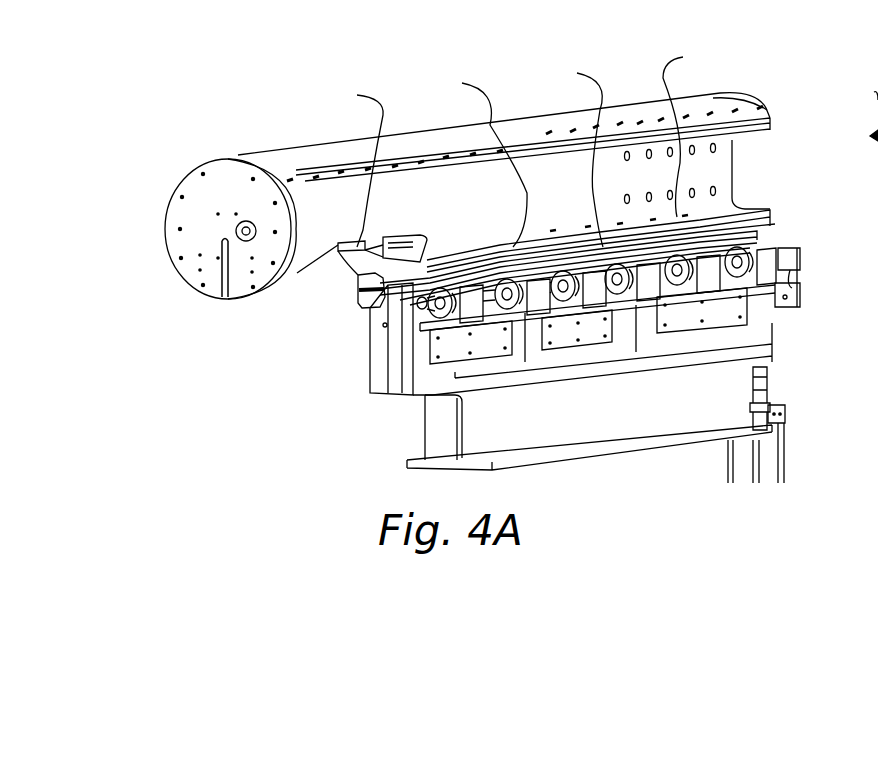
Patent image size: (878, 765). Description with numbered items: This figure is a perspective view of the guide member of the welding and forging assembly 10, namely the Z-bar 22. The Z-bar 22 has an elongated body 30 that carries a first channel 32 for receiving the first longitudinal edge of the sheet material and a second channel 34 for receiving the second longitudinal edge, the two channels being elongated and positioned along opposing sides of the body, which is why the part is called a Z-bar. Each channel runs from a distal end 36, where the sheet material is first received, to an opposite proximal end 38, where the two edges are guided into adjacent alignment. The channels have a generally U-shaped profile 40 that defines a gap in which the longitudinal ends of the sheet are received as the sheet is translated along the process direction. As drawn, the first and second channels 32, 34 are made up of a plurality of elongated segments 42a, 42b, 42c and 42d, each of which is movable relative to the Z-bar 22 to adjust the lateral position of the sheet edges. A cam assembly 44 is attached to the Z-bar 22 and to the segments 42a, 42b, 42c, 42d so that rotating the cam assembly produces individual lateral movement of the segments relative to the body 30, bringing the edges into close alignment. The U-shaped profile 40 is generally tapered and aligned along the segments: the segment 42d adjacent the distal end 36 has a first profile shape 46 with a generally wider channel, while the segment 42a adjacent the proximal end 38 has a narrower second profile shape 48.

The assembly 10 is at (368, 44).
The Z-bar 22 is at (402, 397).
The body 30 is at (292, 165).
The first channel 32 is at (785, 237).
The second channel 34 is at (330, 290).
The distal end 36 is at (800, 205).
The proximal end 38 is at (335, 308).
The U-shaped profile 40 is at (663, 243).
The elongated segment 42a is at (350, 166).
The elongated segment 42b is at (473, 160).
The elongated segment 42c is at (569, 153).
The elongated segment 42d is at (695, 130).
The cam assembly 44 is at (803, 270).
The first profile shape 46 is at (727, 230).
The second profile shape 48 is at (373, 393).